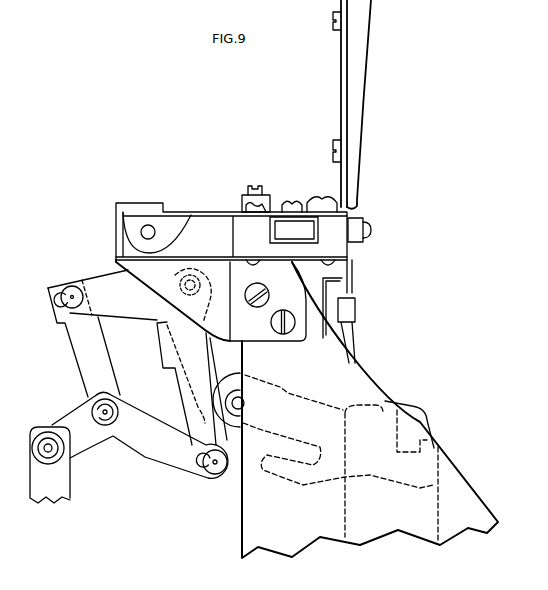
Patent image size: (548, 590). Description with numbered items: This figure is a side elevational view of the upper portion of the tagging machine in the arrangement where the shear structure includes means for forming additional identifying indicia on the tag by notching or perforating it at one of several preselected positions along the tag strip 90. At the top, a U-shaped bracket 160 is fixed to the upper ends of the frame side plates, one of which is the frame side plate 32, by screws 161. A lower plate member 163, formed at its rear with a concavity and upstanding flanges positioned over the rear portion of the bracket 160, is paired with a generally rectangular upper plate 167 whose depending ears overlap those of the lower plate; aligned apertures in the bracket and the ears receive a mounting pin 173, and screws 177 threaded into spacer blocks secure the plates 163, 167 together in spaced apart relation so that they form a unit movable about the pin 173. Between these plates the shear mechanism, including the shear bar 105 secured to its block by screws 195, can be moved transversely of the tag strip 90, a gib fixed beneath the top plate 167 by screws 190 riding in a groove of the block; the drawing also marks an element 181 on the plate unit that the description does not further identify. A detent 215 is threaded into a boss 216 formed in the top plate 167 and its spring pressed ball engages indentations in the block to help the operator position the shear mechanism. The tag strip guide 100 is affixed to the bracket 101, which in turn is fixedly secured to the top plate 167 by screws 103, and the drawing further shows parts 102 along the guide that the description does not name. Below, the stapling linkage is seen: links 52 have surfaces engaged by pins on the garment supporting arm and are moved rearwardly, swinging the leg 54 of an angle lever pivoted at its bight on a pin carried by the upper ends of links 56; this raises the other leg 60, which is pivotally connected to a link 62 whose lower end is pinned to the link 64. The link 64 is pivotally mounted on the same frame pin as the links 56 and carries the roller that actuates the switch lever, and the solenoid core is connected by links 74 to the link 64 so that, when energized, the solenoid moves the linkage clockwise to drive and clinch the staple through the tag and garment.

The frame side plate 32 is at (370, 410).
The link 52 is at (290, 392).
The leg of angle lever 54 is at (217, 376).
The link 56 is at (183, 400).
The leg of angle lever 60 is at (118, 304).
The link 62 is at (83, 348).
The link 64 is at (147, 444).
The link 74 is at (60, 487).
The tag strip 90 is at (353, 268).
The tag strip guide 100 is at (360, 92).
The bracket 101 is at (341, 64).
The clip 102 is at (333, 14).
The screw 103 is at (318, 197).
The shear bar 105 is at (362, 224).
The U-shaped bracket 160 is at (254, 334).
The screw 161 is at (289, 333).
The lower plate member 163 is at (118, 262).
The upper plate 167 is at (205, 212).
The mounting pin 173 is at (141, 232).
The screw 177 is at (246, 204).
The indicator 181 is at (294, 230).
The screw 190 is at (292, 203).
The screw 195 is at (372, 232).
The detent 215 is at (268, 186).
The boss 216 is at (256, 195).